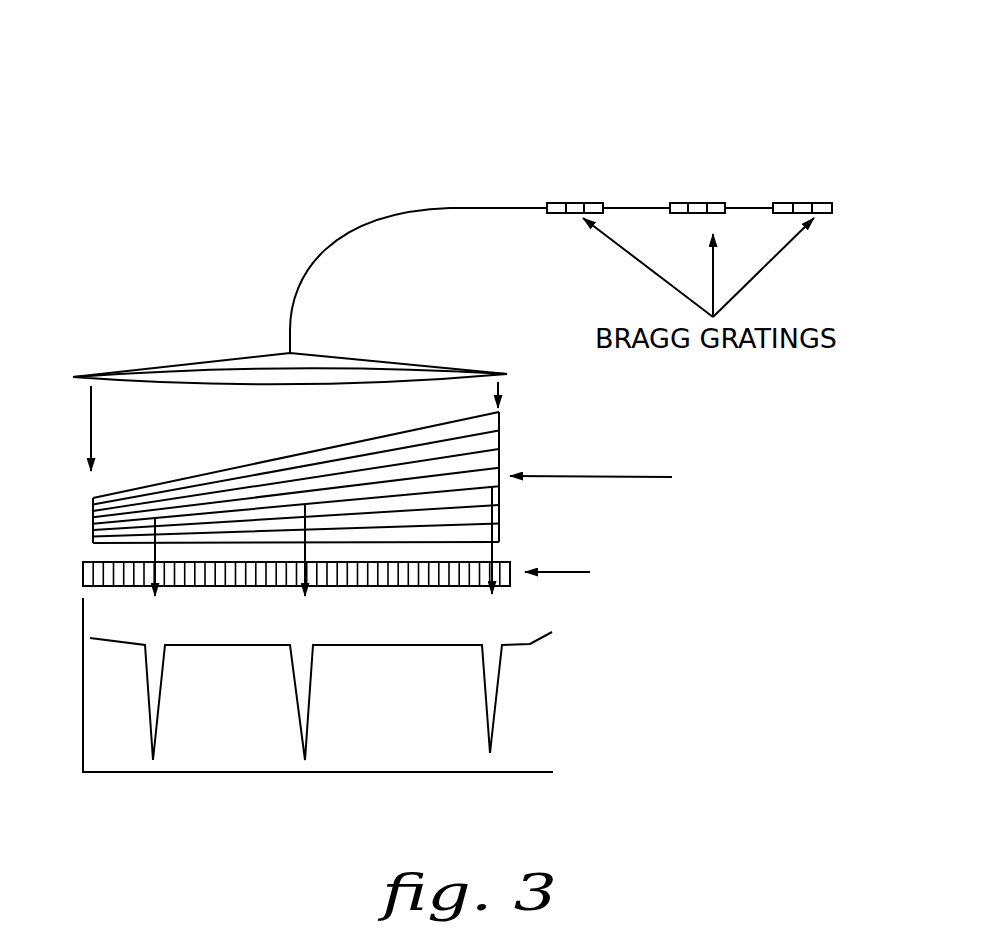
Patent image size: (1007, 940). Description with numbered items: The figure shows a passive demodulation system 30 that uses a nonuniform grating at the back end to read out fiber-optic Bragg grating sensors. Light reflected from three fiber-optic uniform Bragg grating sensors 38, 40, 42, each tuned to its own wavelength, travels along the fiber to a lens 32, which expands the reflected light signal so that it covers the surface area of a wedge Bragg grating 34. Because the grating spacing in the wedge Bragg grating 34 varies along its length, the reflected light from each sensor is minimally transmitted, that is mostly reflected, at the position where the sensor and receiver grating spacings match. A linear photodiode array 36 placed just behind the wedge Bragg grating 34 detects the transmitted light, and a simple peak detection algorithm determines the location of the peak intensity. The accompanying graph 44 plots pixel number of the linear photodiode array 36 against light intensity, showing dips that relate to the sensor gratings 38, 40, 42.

The demodulation system 30 is at (316, 98).
The lens 32 is at (435, 368).
The wedge Bragg grating 34 is at (687, 420).
The linear photodiode array 36 is at (510, 586).
The fiber-optic uniform Bragg grating sensor 38 is at (592, 203).
The fiber-optic uniform Bragg grating sensor 40 is at (715, 203).
The fiber-optic uniform Bragg grating sensor 42 is at (825, 203).
The graph 44 is at (527, 688).